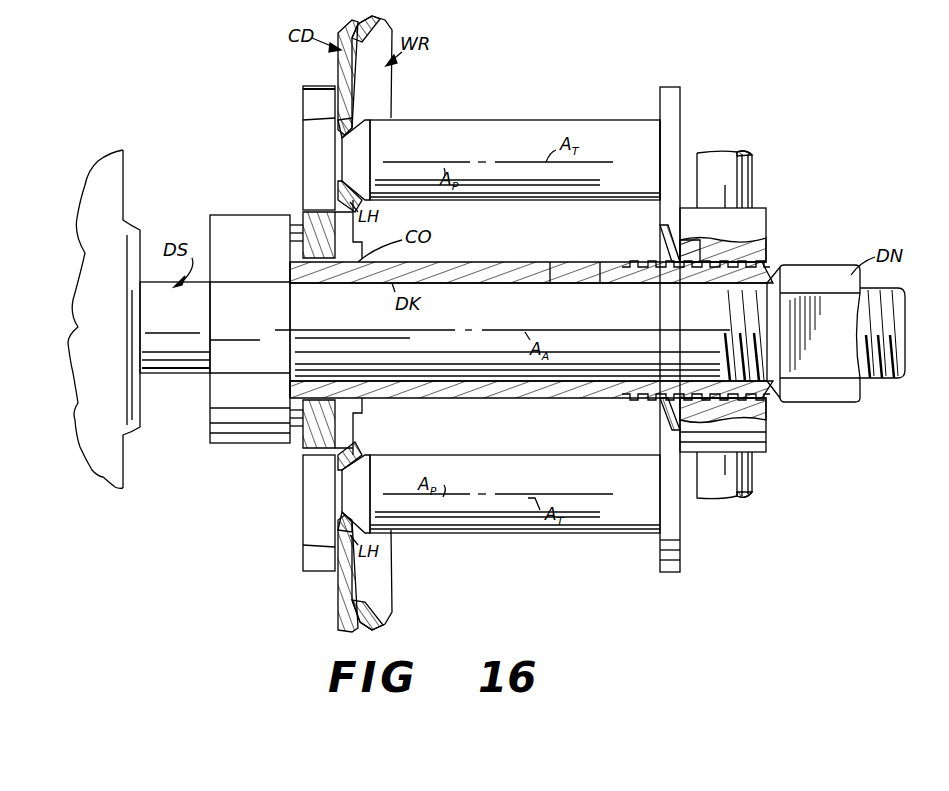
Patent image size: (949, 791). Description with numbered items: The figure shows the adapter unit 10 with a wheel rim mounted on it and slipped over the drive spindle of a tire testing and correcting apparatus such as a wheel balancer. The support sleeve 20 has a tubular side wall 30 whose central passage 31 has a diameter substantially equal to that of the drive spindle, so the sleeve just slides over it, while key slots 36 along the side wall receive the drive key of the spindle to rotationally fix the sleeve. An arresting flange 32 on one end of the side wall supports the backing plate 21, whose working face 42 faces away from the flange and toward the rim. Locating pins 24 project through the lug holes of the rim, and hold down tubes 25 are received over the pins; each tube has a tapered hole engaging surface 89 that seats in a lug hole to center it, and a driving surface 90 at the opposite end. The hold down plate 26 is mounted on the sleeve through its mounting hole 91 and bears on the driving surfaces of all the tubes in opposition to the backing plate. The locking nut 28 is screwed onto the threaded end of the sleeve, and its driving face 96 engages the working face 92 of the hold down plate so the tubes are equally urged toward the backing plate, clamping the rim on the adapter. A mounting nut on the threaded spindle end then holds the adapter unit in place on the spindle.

The adapter unit 10 is at (712, 115).
The support sleeve 20 is at (490, 262).
The backing plate 21 is at (300, 87).
The locating pins 24 is at (340, 155).
The hold down tubes 25 is at (512, 118).
The hold down plate 26 is at (698, 72).
The locking nut 28 is at (773, 218).
The tubular side wall 30 is at (450, 268).
The central passage 31 is at (513, 270).
The arresting flange 32 is at (298, 240).
The key slots 36 is at (548, 272).
The working face 42 is at (337, 112).
The tapered hole engaging surface 89 is at (355, 138).
The driving surface 90 is at (660, 170).
The mounting hole 91 is at (662, 408).
The working face 92 is at (665, 228).
The driving face 96 is at (680, 248).